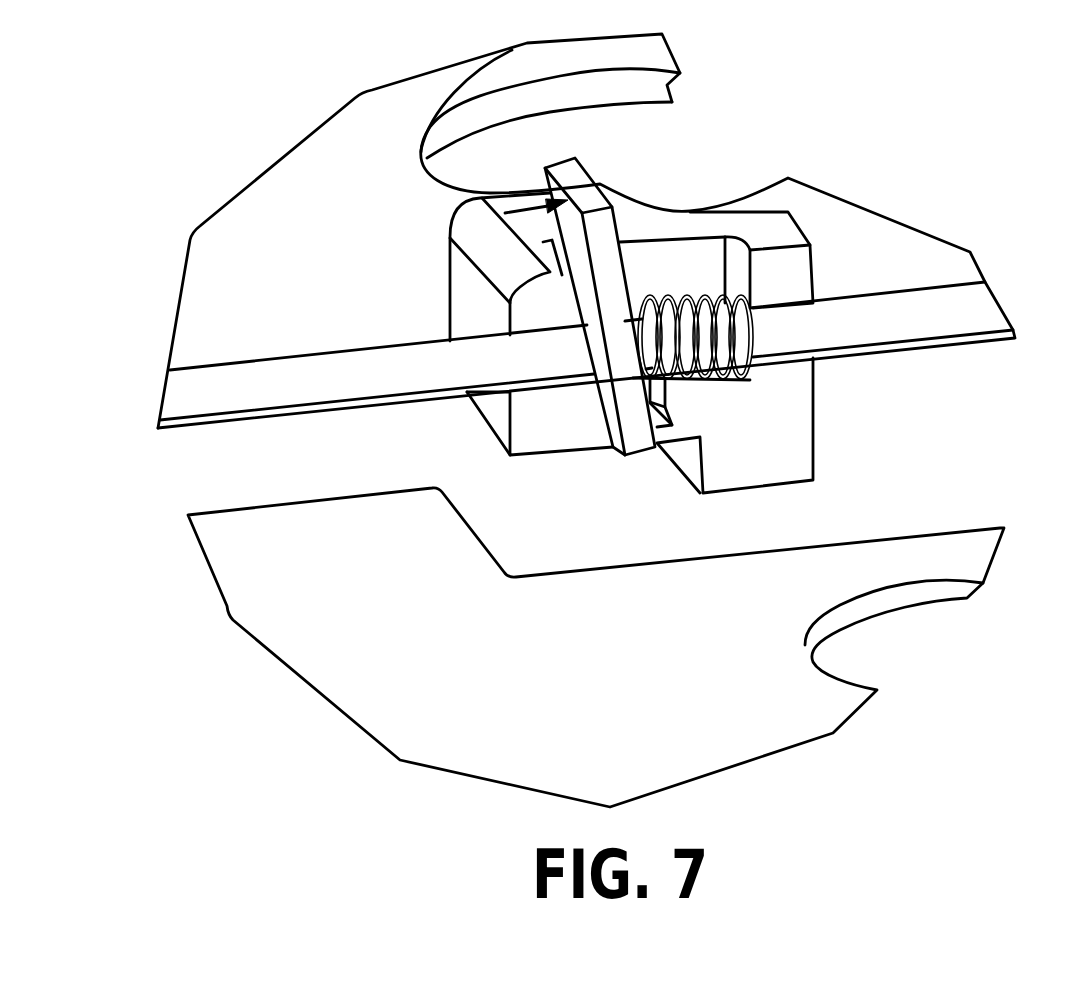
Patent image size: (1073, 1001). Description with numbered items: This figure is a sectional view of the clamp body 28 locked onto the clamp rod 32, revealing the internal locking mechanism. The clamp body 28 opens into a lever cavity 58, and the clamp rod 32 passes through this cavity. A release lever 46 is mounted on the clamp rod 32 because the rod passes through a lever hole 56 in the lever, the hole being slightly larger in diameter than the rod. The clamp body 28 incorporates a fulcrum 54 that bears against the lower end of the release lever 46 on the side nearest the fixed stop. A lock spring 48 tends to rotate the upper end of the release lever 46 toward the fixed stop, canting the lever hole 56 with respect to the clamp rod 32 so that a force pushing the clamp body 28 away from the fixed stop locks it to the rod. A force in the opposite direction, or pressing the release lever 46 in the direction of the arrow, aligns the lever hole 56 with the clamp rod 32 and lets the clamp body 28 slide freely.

The clamp body 28 is at (586, 263).
The clamp rod 32 is at (556, 322).
The release lever 46 is at (507, 245).
The lock spring 48 is at (773, 378).
The fulcrum 54 is at (540, 517).
The lever hole 56 is at (507, 336).
The lever cavity 58 is at (711, 270).